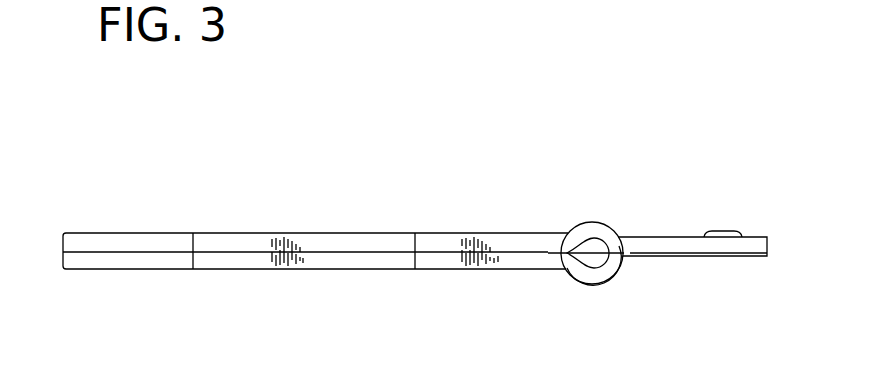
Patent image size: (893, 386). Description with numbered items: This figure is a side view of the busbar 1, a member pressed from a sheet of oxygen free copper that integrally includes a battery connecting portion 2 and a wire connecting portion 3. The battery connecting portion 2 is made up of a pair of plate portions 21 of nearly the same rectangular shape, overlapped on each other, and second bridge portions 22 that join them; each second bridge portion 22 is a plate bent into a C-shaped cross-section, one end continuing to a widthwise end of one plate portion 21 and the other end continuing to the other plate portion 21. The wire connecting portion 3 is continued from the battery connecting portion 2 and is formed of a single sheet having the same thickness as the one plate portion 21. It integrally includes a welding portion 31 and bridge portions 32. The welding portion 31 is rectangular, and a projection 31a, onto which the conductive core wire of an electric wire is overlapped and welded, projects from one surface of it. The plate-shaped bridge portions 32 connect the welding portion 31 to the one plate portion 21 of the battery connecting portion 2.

The busbar 1 is at (432, 143).
The battery connecting portion 2 is at (321, 231).
The plate portion 21 is at (233, 244).
The second bridge portion 22 is at (597, 286).
The wire connecting portion 3 is at (657, 234).
The welding portion 31 is at (727, 258).
The projection 31a is at (719, 231).
The bridge portion 32 is at (660, 258).